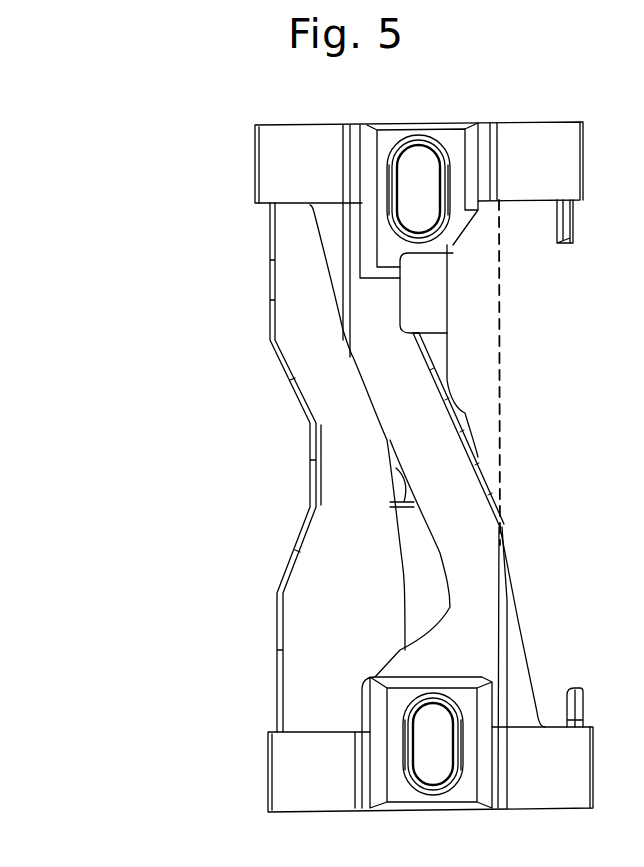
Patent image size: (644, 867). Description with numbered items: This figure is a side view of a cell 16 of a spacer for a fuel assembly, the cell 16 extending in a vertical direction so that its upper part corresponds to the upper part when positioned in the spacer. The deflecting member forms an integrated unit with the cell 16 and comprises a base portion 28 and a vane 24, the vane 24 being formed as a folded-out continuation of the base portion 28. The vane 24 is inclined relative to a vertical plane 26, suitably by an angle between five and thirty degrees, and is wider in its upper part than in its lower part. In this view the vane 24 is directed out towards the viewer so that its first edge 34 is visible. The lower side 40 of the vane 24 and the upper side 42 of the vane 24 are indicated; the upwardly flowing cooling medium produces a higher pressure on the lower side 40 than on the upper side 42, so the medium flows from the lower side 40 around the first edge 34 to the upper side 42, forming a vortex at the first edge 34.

The cell 16 is at (178, 130).
The vane 24 is at (484, 434).
The vertical plane 26 is at (502, 485).
The base portion 28 is at (432, 442).
The first edge 34 is at (503, 457).
The lower side of the vane 40 is at (450, 443).
The upper side of the vane 42 is at (460, 403).